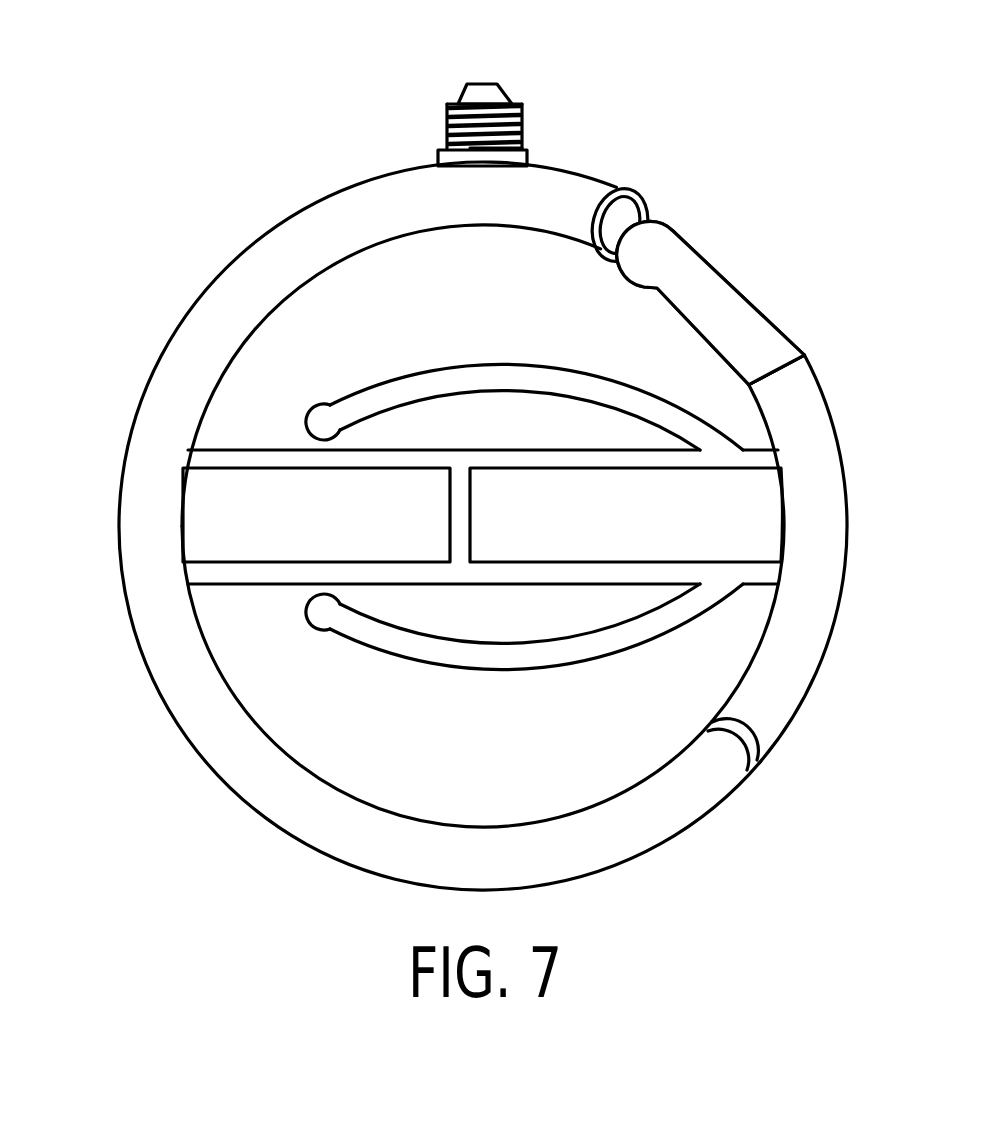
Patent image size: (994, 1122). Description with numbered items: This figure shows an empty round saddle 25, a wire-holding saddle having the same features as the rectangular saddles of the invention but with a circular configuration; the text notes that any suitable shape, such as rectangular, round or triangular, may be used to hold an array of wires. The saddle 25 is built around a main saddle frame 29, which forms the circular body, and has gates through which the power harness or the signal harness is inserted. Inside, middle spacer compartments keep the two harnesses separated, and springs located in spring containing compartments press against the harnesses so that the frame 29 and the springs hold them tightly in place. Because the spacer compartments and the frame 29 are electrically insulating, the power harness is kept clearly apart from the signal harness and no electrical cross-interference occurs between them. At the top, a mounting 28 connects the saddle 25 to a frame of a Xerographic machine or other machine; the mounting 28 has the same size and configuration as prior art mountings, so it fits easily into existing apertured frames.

The round saddle 25 is at (295, 151).
The mounting 28 is at (497, 88).
The main saddle frame 29 is at (825, 598).